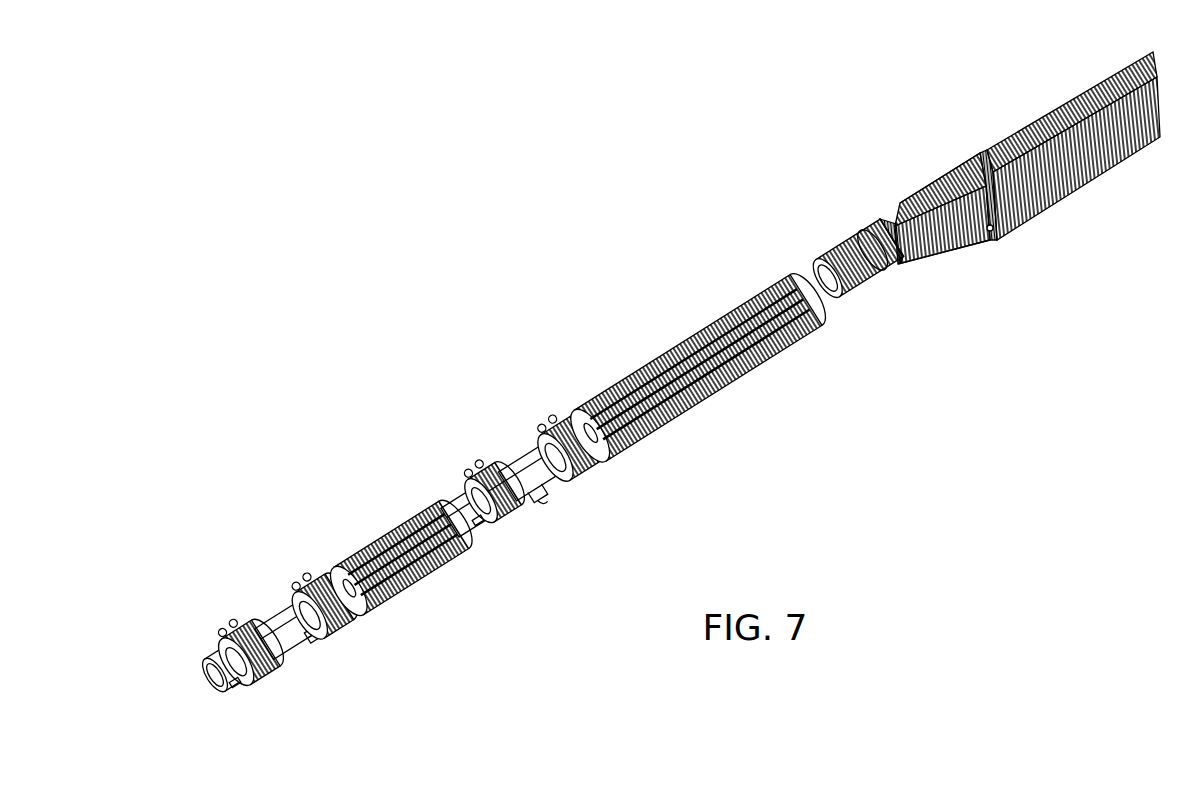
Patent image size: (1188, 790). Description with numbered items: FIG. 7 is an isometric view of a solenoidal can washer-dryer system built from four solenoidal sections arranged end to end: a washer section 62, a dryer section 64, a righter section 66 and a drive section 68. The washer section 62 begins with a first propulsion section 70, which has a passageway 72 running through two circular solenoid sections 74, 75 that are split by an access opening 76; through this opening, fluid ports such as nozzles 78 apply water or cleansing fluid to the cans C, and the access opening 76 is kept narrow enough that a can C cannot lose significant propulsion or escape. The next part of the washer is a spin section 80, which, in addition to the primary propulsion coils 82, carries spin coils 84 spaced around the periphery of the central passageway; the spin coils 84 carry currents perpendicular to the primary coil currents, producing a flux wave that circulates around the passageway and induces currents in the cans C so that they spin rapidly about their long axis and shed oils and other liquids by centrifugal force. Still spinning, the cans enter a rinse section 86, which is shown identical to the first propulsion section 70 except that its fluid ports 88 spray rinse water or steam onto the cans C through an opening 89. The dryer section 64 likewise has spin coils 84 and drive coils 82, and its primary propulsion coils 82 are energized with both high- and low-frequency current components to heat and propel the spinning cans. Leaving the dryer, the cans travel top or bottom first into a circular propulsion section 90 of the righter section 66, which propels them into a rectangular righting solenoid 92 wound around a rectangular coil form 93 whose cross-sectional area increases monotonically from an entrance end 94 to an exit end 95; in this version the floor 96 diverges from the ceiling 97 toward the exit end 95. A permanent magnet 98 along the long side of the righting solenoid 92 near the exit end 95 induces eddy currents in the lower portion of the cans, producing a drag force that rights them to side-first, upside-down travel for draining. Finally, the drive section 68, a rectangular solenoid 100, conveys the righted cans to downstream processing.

The washer section 62 is at (557, 390).
The dryer section 64 is at (561, 383).
The righter section 66 is at (783, 239).
The drive section 68 is at (963, 124).
The first propulsion section 70 is at (205, 636).
The passageway 72 is at (215, 650).
The circular solenoid section 74 is at (268, 673).
The circular solenoid section 75 is at (347, 618).
The access opening 76 is at (310, 654).
The nozzles 78 is at (327, 630).
The spin section 80 is at (325, 563).
The primary propulsion coils 82 is at (445, 552).
The spin coils 84 is at (397, 587).
The rinse section 86 is at (450, 486).
The fluid ports 88 is at (577, 473).
The opening 89 is at (540, 500).
The propulsion section 90 is at (860, 287).
The righting solenoid 92 is at (940, 255).
The rectangular coil form 93 is at (862, 233).
The entrance end 94 is at (895, 267).
The exit end 95 is at (997, 237).
The floor 96 is at (927, 253).
The ceiling 97 is at (897, 200).
The permanent magnet 98 is at (990, 232).
The rectangular solenoid 100 is at (1072, 188).
The can C is at (222, 680).